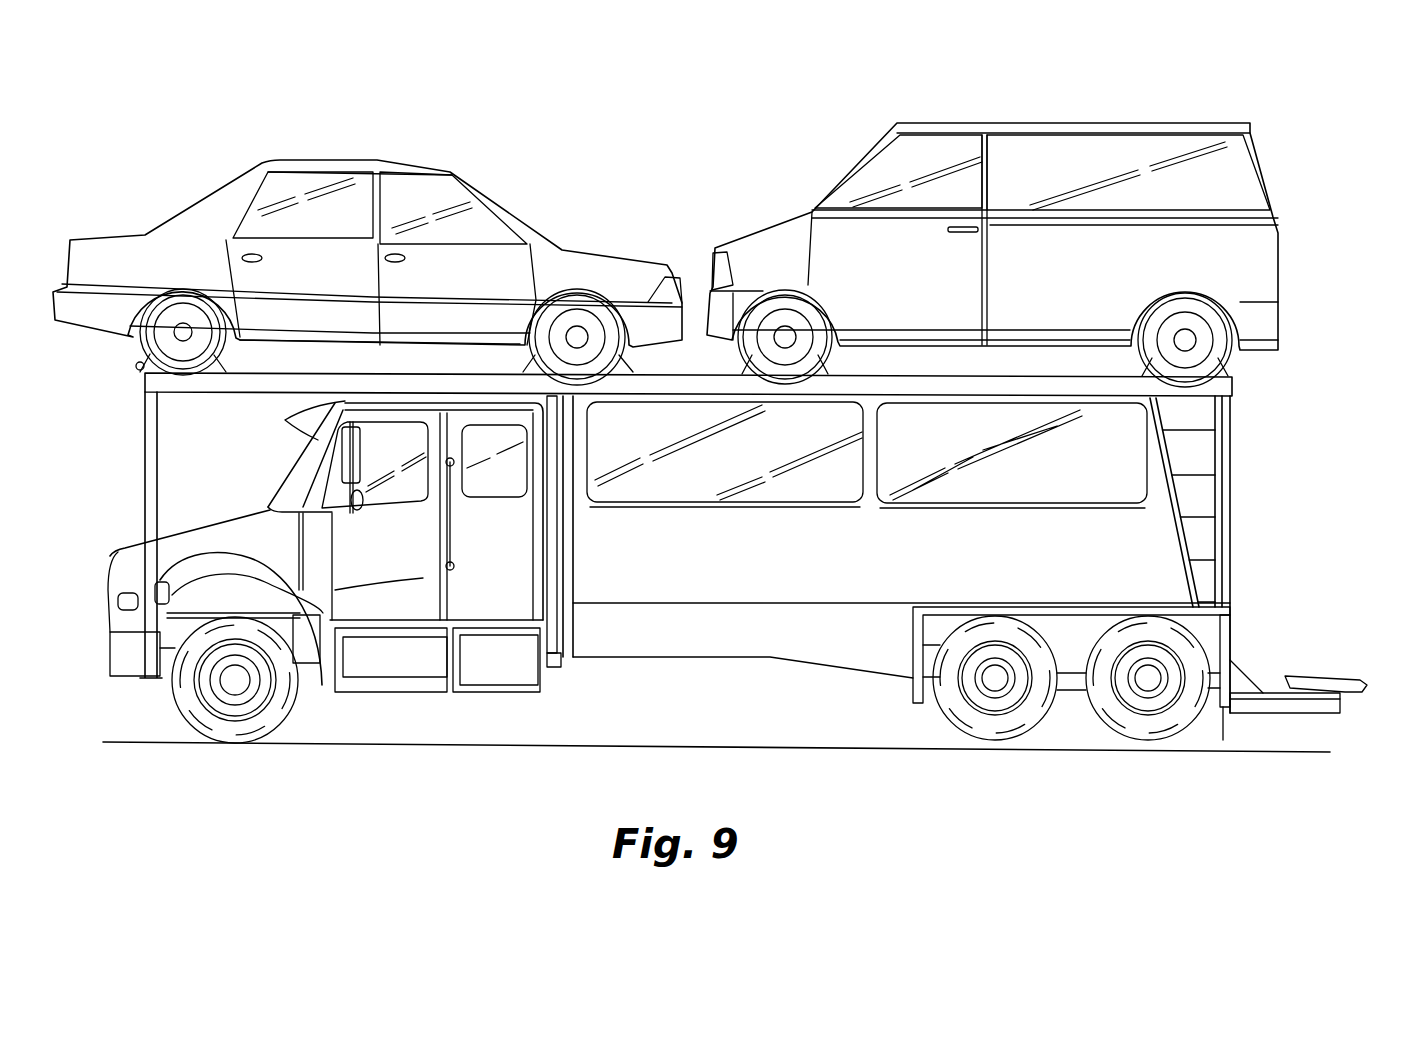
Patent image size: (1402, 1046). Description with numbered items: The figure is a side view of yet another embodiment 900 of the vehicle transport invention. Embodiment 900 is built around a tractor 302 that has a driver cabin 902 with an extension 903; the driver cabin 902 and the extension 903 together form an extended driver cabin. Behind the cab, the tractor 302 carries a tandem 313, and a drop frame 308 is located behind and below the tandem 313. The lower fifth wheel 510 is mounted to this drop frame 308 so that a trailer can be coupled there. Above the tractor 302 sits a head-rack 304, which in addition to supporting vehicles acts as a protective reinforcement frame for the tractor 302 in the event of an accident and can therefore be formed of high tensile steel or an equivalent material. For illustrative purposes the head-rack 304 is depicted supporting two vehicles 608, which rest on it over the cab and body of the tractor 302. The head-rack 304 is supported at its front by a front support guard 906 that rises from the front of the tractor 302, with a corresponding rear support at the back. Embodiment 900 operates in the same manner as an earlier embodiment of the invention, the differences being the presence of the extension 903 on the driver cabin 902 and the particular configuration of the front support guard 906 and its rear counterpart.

The embodiment 900 is at (207, 92).
The vehicles 608 is at (503, 203).
The front support guard 906 is at (152, 433).
The head-rack 304 is at (233, 392).
The tractor 302 is at (112, 545).
The driver cabin 902 is at (232, 532).
The extension 903 is at (492, 608).
The drop frame 308 is at (1223, 443).
The lower fifth wheel 510 is at (1300, 676).
The tandem 313 is at (990, 730).